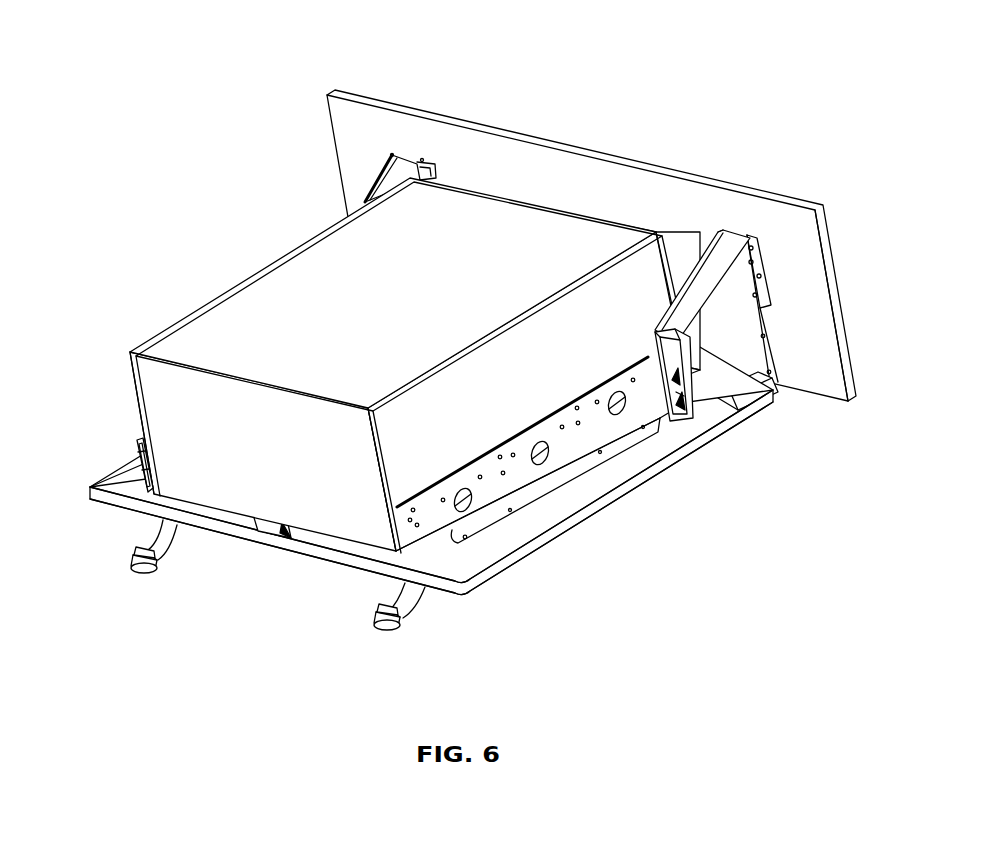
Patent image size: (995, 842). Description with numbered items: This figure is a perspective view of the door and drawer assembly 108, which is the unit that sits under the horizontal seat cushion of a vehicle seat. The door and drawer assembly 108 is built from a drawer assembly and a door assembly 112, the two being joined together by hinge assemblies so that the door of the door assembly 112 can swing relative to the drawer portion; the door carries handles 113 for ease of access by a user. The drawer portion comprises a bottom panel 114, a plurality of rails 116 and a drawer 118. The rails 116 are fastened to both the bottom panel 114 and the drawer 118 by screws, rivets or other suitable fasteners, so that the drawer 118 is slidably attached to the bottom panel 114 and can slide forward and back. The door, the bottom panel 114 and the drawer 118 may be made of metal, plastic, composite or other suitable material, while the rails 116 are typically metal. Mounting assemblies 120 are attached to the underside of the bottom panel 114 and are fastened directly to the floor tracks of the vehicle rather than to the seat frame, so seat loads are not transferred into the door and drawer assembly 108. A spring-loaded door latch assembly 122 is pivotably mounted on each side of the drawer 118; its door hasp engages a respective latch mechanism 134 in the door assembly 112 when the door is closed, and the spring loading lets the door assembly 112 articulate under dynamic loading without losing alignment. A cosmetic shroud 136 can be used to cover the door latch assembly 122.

The door and drawer assembly 108 is at (142, 110).
The door assembly 112 is at (330, 162).
The handles 113 is at (422, 158).
The bottom panel 114 is at (107, 485).
The rails 116 is at (136, 445).
The drawer 118 is at (223, 294).
The mounting assemblies 120 is at (158, 562).
The door latch assembly 122 is at (702, 368).
The latch mechanism 134 is at (392, 155).
The cosmetic shroud 136 is at (707, 398).